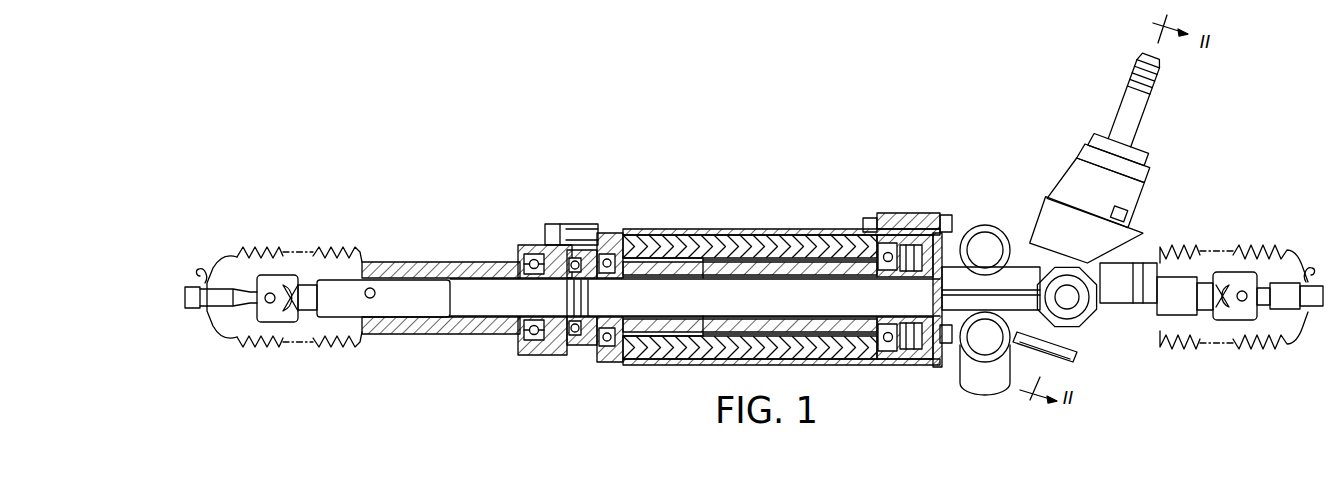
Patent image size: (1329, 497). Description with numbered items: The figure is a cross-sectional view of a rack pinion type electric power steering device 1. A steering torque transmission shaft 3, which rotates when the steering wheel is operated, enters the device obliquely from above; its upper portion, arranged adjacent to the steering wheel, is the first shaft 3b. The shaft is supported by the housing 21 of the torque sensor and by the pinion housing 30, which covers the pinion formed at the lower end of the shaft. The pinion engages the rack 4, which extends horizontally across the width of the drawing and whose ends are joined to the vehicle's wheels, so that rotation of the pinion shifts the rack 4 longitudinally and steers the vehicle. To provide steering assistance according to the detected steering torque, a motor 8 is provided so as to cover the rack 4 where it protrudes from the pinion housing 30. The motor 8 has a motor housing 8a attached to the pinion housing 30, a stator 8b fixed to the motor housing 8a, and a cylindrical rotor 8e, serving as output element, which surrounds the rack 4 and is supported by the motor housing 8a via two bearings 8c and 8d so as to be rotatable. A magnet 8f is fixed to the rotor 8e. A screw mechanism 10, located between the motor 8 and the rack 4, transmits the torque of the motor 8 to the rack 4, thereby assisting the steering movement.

The electric power steering device 1 is at (1150, 170).
The steering torque transmission shaft 3 is at (1125, 110).
The first shaft 3b is at (1138, 108).
The rack 4 is at (435, 302).
The motor 8 is at (773, 228).
The motor housing 8a is at (693, 242).
The stator 8b is at (663, 243).
The bearing 8c is at (612, 232).
The bearing 8d is at (892, 247).
The rotor 8e is at (722, 240).
The magnet 8f is at (820, 265).
The screw mechanism 10 is at (581, 330).
The housing 21 is at (1080, 182).
The pinion housing 30 is at (1073, 337).